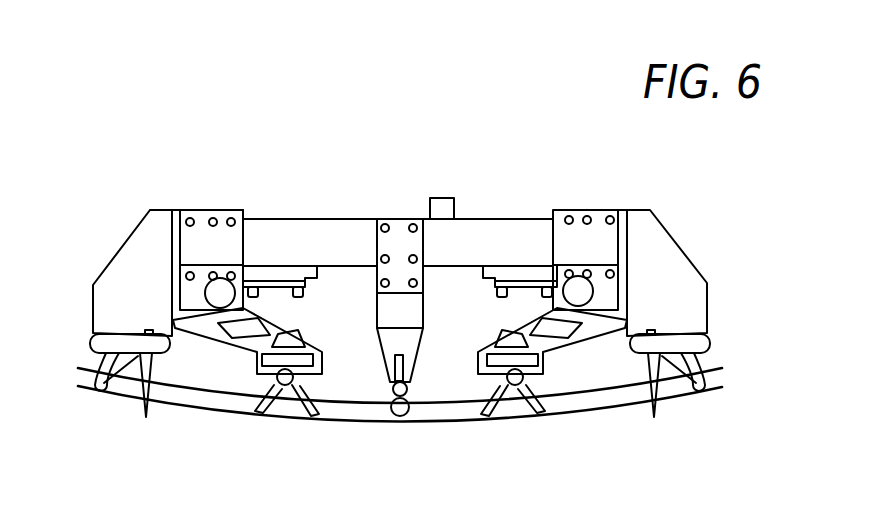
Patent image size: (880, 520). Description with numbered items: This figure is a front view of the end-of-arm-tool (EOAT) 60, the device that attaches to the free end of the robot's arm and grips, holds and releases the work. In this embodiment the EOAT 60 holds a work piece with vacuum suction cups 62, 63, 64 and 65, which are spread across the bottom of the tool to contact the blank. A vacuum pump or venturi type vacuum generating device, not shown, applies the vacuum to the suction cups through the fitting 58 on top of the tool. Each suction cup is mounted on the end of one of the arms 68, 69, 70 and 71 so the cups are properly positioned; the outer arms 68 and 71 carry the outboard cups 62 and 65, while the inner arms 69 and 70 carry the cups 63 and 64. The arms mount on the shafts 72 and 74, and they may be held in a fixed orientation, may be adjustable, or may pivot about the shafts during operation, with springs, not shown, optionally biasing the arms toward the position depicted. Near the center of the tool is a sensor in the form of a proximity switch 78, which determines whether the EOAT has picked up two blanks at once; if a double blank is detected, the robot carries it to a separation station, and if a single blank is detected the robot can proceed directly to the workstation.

The end-of-arm-tool 60 is at (126, 136).
The fitting 58 is at (441, 198).
The shaft 72 is at (223, 276).
The shaft 74 is at (593, 278).
The arm 68 is at (188, 328).
The arm 71 is at (618, 318).
The suction cup 62 is at (115, 393).
The suction cup 65 is at (684, 393).
The arm 69 is at (286, 328).
The arm 70 is at (521, 327).
The suction cup 63 is at (278, 420).
The suction cup 64 is at (528, 413).
The proximity switch 78 is at (415, 378).